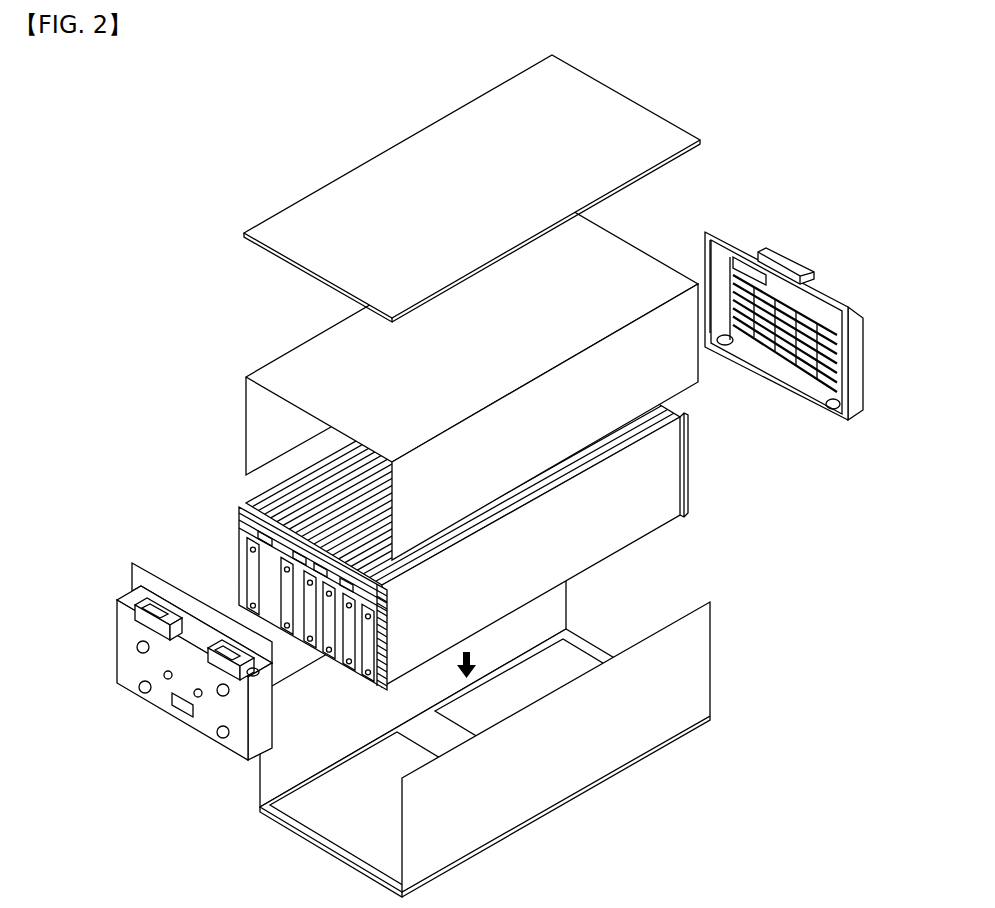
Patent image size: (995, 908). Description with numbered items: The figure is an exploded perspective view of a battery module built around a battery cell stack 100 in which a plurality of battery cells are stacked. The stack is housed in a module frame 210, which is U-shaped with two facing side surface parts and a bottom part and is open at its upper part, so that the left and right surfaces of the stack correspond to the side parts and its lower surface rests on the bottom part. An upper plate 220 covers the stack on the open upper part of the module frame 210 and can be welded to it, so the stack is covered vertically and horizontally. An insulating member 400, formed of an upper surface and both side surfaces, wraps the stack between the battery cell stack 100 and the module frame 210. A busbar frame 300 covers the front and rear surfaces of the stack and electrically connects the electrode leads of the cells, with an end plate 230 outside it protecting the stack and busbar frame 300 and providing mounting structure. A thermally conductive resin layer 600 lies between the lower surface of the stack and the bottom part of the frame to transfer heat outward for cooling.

The battery cell stack 100 is at (681, 538).
The module frame 210 is at (553, 780).
The upper plate 220 is at (383, 174).
The end plate 230 is at (728, 240).
The busbar frame 300 is at (253, 568).
The insulating member 400 is at (311, 360).
The thermally conductive resin layer 600 is at (357, 825).